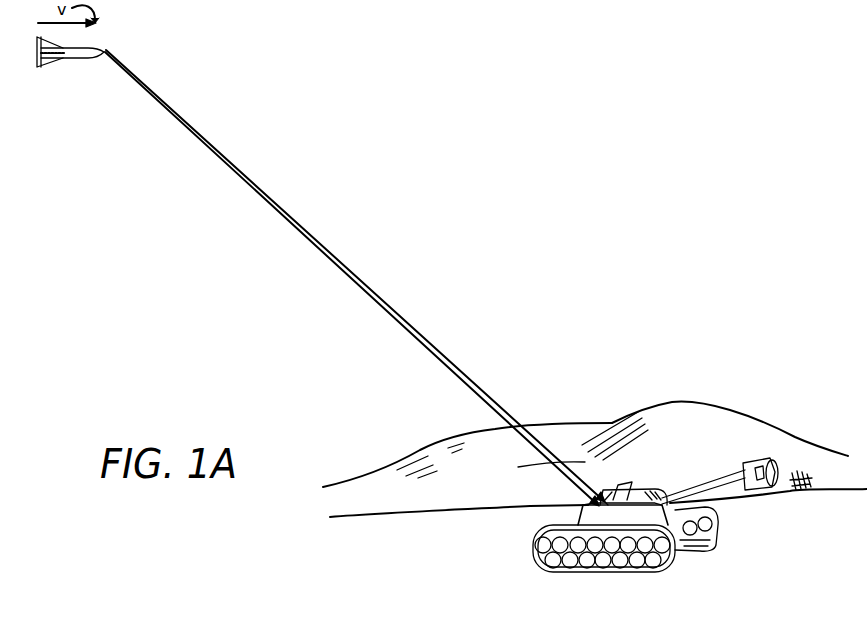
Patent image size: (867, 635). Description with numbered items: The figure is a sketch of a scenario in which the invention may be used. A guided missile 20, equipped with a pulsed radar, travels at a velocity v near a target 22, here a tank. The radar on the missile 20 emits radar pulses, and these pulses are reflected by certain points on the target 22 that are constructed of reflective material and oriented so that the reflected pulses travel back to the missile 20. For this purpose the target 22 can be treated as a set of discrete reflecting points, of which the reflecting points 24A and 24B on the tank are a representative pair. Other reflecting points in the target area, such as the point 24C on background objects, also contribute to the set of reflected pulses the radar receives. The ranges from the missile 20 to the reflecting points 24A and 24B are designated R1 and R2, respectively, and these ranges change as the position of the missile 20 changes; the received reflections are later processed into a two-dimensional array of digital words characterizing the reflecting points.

The missile 20 is at (90, 46).
The target 22 is at (651, 487).
The reflecting point 24A is at (594, 502).
The reflecting point 24B is at (601, 500).
The reflecting point 24C is at (522, 599).
The range R1 is at (332, 262).
The range R2 is at (323, 244).